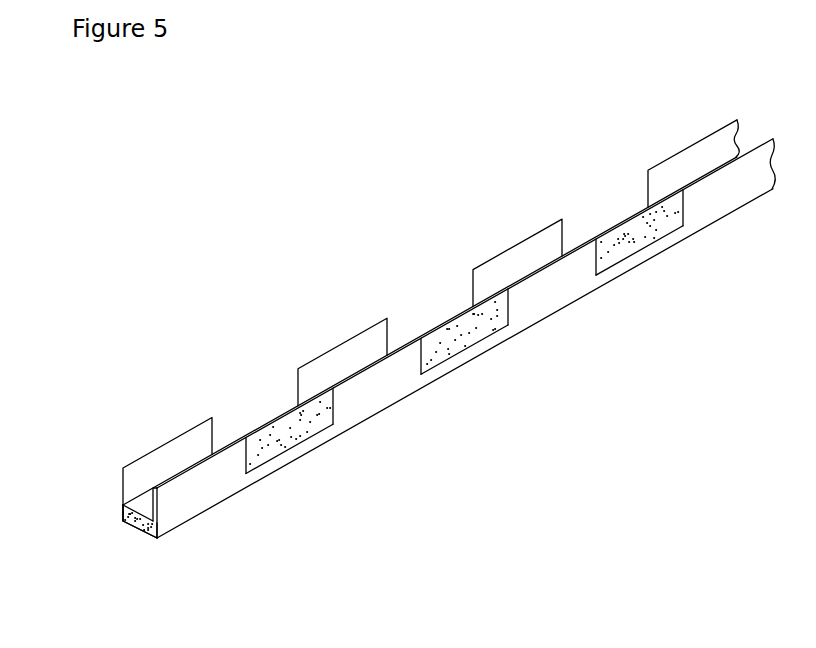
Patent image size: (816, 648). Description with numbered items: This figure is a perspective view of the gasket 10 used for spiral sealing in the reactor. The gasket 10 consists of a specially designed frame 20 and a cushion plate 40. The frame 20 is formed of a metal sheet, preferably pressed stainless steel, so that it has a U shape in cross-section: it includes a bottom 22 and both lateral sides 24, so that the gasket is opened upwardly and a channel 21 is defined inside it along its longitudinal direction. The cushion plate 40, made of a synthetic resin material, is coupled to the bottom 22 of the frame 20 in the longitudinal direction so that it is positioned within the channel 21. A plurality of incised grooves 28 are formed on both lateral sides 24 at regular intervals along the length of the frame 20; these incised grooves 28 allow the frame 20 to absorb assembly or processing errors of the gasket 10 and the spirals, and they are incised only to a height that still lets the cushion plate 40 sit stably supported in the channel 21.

The gasket 10 is at (146, 280).
The frame 20 is at (111, 614).
The channel 21 is at (191, 462).
The bottom 22 is at (138, 530).
The lateral sides 24 is at (121, 485).
The incised grooves 28 is at (247, 411).
The cushion plate 40 is at (143, 506).